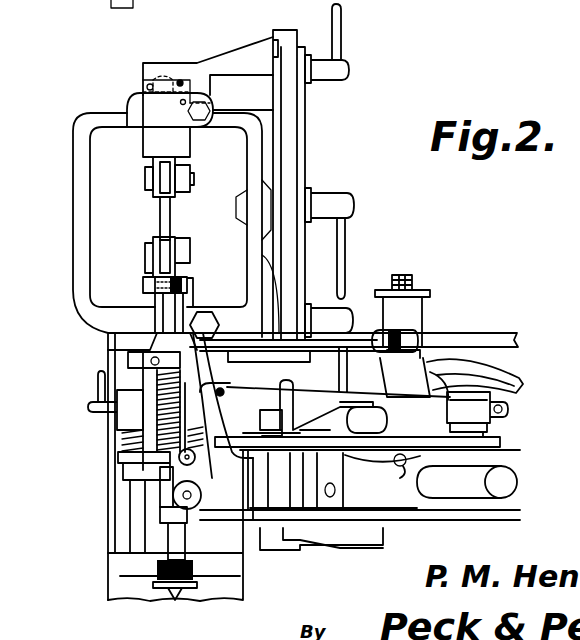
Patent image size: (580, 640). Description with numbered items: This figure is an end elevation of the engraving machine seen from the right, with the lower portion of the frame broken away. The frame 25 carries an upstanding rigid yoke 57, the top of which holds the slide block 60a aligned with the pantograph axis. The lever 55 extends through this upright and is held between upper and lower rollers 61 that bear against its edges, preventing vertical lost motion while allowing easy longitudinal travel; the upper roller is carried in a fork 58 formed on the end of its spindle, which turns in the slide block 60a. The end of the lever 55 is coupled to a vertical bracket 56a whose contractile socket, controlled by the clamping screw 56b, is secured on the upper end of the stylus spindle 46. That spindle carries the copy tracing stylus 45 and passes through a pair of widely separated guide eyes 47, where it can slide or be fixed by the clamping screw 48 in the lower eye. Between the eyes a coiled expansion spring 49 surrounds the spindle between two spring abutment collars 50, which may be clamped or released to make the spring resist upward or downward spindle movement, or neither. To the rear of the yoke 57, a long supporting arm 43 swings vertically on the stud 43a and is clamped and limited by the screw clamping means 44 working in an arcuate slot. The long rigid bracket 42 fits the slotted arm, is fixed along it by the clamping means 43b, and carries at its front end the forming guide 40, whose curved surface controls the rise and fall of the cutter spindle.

The frame 25 is at (113, 513).
The forming guide 40 is at (143, 94).
The bracket 42 is at (266, 44).
The supporting arm 43 is at (290, 35).
The stud 43a is at (338, 317).
The clamping means 43b is at (333, 72).
The screw clamping means 44 is at (340, 200).
The copy tracing stylus 45 is at (175, 597).
The stylus spindle 46 is at (167, 310).
The guide eyes 47 is at (165, 342).
The clamping screw 48 is at (195, 503).
The coiled expansion spring 49 is at (143, 430).
The spring abutment collars 50 is at (163, 363).
The lever 55 is at (162, 213).
The vertical bracket 56a is at (187, 279).
The clamping screw 56b is at (148, 262).
The yoke 57 is at (75, 210).
The fork 58 is at (158, 196).
The slide block 60a is at (152, 138).
The rollers 61 is at (168, 178).